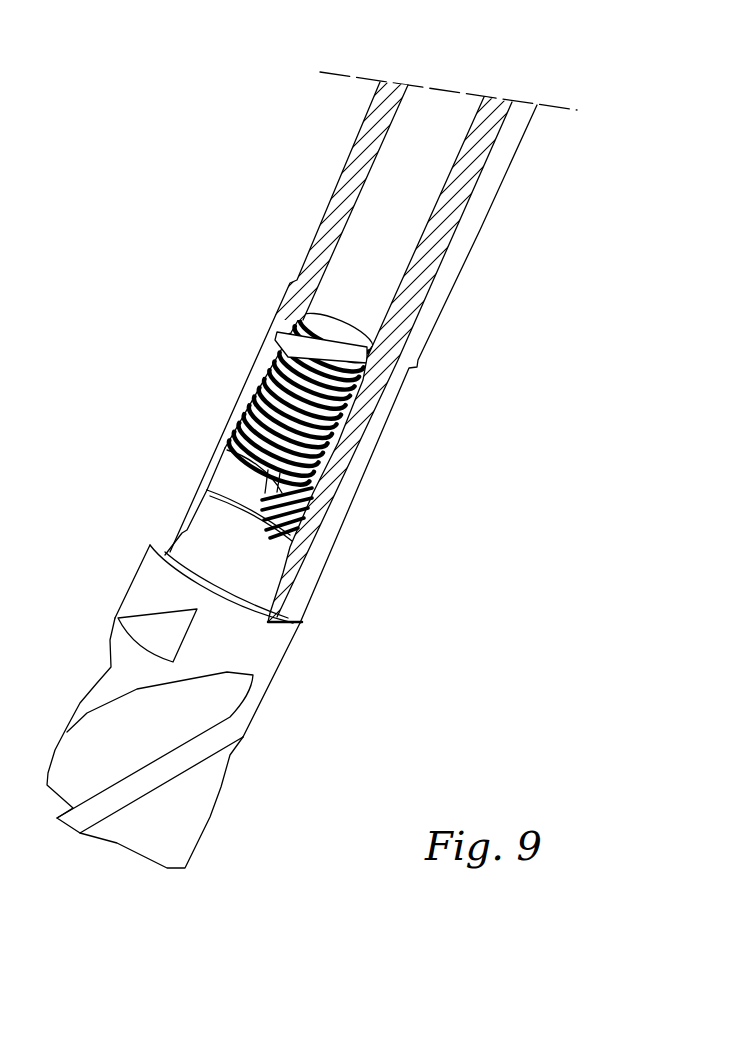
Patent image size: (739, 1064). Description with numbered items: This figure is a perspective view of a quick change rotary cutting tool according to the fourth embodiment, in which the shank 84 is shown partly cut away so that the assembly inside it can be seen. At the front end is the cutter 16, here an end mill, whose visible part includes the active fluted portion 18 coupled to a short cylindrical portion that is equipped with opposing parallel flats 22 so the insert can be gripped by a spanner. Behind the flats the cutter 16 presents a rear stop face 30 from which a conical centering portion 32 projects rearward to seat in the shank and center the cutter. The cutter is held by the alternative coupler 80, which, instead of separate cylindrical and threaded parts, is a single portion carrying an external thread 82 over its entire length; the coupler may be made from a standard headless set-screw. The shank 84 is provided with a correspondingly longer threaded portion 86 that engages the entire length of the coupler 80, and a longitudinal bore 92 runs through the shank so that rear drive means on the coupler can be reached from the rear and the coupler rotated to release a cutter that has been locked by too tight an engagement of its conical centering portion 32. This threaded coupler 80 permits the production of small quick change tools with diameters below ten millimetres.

The cutter 16 is at (87, 690).
The active fluted portion 18 is at (213, 793).
The parallel flats 22 is at (130, 607).
The rear stop face 30 is at (155, 540).
The conical centering portion 32 is at (183, 527).
The coupler 80 is at (278, 330).
The external thread 82 is at (222, 445).
The shank 84 is at (328, 213).
The threaded portion 86 is at (330, 462).
The longitudinal bore 92 is at (437, 100).